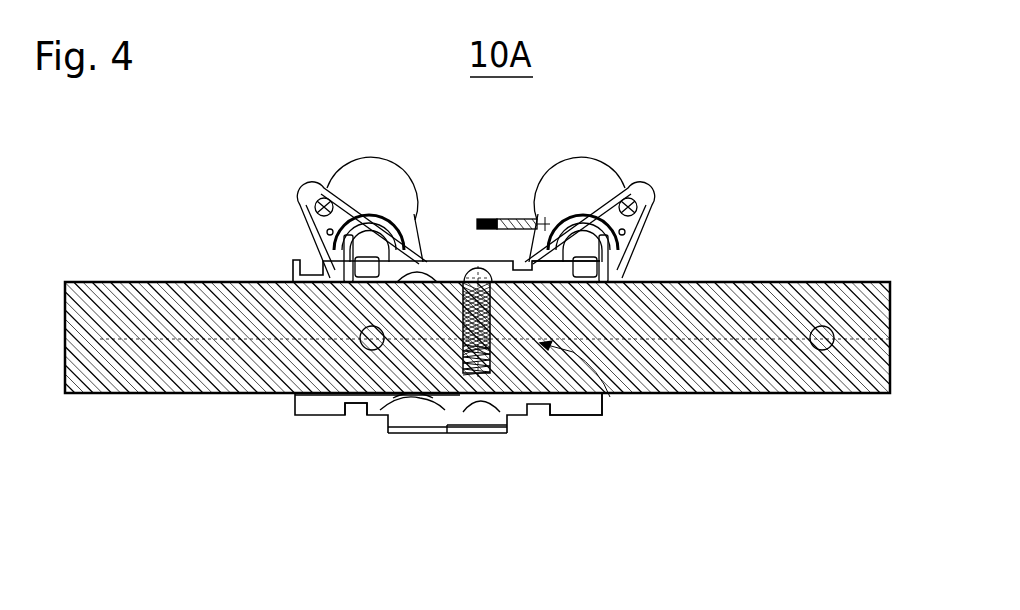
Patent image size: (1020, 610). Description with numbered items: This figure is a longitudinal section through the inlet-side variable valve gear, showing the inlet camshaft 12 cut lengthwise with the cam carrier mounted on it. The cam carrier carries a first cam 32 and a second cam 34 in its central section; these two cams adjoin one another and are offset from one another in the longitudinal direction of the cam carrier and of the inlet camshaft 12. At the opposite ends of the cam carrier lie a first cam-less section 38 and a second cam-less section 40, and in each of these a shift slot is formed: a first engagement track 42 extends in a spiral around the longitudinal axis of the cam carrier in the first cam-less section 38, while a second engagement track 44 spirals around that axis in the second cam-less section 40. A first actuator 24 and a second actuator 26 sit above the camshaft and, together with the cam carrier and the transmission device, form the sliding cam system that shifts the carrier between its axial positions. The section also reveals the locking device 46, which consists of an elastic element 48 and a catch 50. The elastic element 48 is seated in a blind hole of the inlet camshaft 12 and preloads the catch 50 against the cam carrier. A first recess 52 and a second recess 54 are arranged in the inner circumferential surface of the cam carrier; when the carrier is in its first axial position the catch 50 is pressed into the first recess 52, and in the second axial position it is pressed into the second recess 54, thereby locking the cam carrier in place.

The inlet camshaft 12 is at (93, 280).
The first actuator 24 is at (620, 176).
The second actuator 26 is at (345, 172).
The first cam 32 is at (467, 418).
The second cam 34 is at (422, 427).
The first cam-less section 38 is at (590, 406).
The second cam-less section 40 is at (293, 418).
The first engagement track 42 is at (533, 410).
The second engagement track 44 is at (313, 272).
The locking device 46 is at (610, 395).
The elastic element 48 is at (642, 281).
The catch 50 is at (460, 272).
The first recess 52 is at (481, 420).
The second recess 54 is at (377, 420).